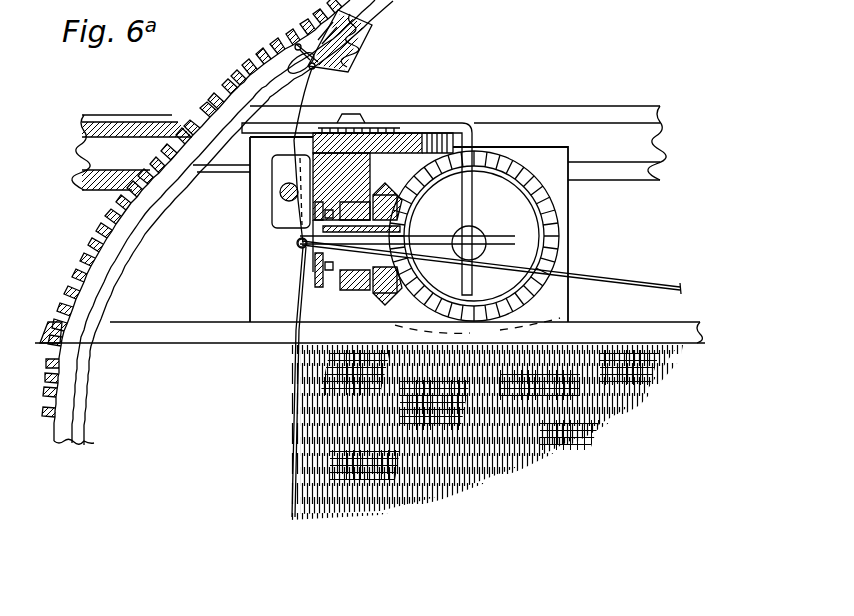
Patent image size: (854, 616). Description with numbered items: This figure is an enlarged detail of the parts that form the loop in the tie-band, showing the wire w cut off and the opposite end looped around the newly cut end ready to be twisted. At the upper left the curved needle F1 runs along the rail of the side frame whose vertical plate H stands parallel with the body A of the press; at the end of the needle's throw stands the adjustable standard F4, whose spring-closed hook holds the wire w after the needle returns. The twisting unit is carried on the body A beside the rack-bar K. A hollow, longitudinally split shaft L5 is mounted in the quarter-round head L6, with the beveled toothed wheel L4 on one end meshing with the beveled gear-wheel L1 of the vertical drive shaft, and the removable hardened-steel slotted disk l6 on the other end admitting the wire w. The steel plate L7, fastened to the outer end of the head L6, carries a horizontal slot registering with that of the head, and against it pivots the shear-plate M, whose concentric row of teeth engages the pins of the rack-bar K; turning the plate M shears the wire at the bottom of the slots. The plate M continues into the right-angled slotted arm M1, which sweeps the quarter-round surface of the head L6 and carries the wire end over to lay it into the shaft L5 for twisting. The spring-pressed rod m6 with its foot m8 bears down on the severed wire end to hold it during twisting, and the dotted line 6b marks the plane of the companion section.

The curved needle F1 is at (138, 221).
The standard F4 is at (356, 77).
The wire w is at (400, 249).
The vertical wall or plate H is at (124, 128).
The shear-plate M is at (357, 202).
The arm M1 is at (472, 216).
The steel plate L7 is at (385, 133).
The quarter-round head L6 is at (368, 174).
The hollow shaft L5 is at (405, 226).
The beveled toothed wheel L4 is at (375, 290).
The beveled gear-wheel L1 is at (584, 235).
The disk l6 is at (316, 270).
The rack-bar K is at (458, 143).
The spring-pressed rod m6 is at (285, 205).
The foot m8 is at (297, 244).
The section line 6b is at (596, 240).
The body A is at (221, 340).